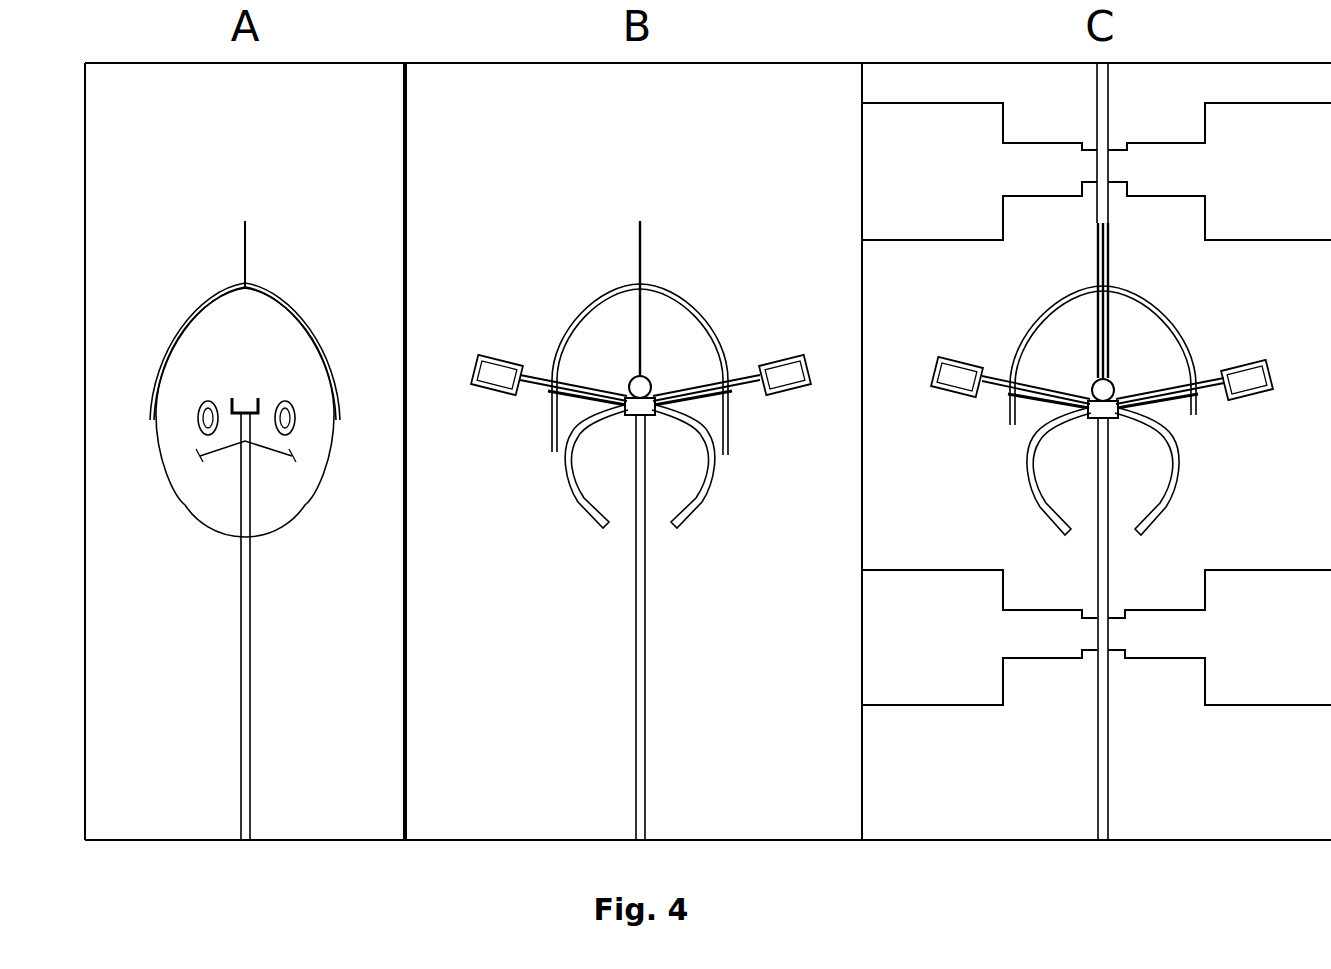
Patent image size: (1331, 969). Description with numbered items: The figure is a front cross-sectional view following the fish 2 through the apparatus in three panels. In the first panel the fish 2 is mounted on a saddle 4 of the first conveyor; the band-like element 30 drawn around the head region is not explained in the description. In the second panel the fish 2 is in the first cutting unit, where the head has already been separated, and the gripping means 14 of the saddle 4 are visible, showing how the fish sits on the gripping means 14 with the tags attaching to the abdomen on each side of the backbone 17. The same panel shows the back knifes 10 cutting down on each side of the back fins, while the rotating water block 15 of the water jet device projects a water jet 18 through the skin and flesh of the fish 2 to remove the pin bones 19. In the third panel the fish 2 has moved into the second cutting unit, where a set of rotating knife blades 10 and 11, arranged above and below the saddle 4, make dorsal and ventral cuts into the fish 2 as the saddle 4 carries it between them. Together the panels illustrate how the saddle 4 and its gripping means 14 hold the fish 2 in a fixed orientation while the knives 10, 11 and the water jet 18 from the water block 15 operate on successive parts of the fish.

The fish 2 is at (176, 491).
The head band 30 is at (281, 292).
The saddle 4 is at (248, 627).
The backbone 17 is at (632, 378).
The water jet 18 is at (742, 378).
The rotating water block 15 is at (778, 360).
The pin bones 19 is at (568, 398).
The gripping means 14 is at (660, 420).
The back knifes 10 is at (1095, 176).
The rotating knife blades 11 is at (1095, 635).